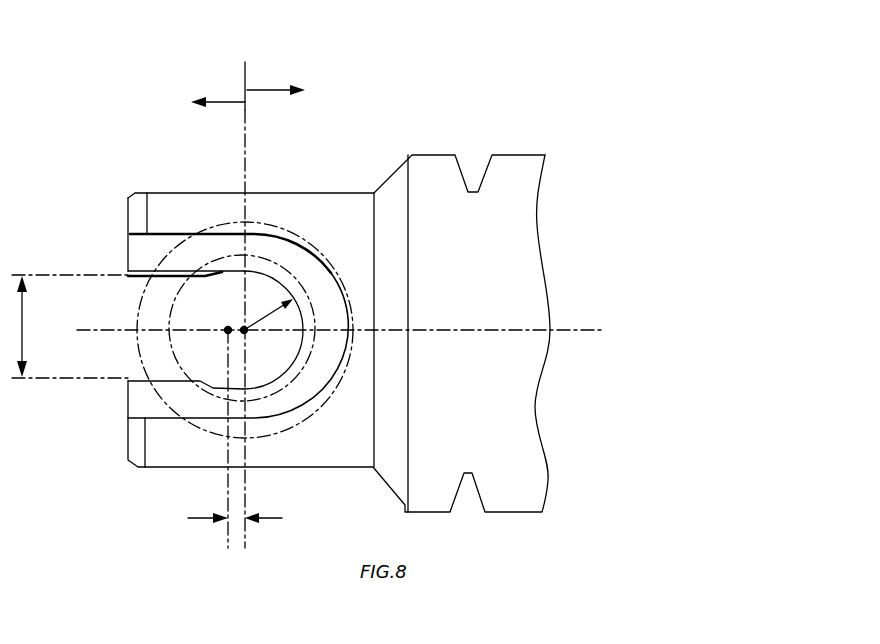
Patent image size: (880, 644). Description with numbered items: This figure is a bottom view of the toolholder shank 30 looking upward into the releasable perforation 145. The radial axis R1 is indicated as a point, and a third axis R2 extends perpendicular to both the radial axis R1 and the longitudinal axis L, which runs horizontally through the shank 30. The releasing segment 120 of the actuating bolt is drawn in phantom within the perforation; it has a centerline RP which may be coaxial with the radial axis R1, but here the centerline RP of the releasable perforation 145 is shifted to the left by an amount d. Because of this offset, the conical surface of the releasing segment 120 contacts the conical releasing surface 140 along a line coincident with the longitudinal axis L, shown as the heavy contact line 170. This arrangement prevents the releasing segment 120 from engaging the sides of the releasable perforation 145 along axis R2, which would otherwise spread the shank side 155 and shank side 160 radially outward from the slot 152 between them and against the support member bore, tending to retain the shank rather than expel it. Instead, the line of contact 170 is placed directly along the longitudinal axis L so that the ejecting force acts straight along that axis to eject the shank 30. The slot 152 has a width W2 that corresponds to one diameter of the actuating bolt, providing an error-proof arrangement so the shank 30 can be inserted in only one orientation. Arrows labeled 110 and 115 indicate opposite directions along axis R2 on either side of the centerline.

The shank 30 is at (175, 193).
The first direction 110 is at (270, 88).
The second direction 115 is at (230, 102).
The releasing segment 120 is at (146, 356).
The conical releasing surface 140 is at (322, 282).
The releasable perforation 145 is at (310, 254).
The slot 152 is at (122, 338).
The shank side 155 is at (136, 430).
The shank side 160 is at (131, 214).
The contact line 170 is at (334, 340).
The centerline RP is at (229, 330).
The radial axis R1 is at (245, 331).
The third axis R2 is at (249, 63).
The width W2 is at (69, 326).
The offset amount d is at (241, 519).
The longitudinal axis L is at (118, 329).